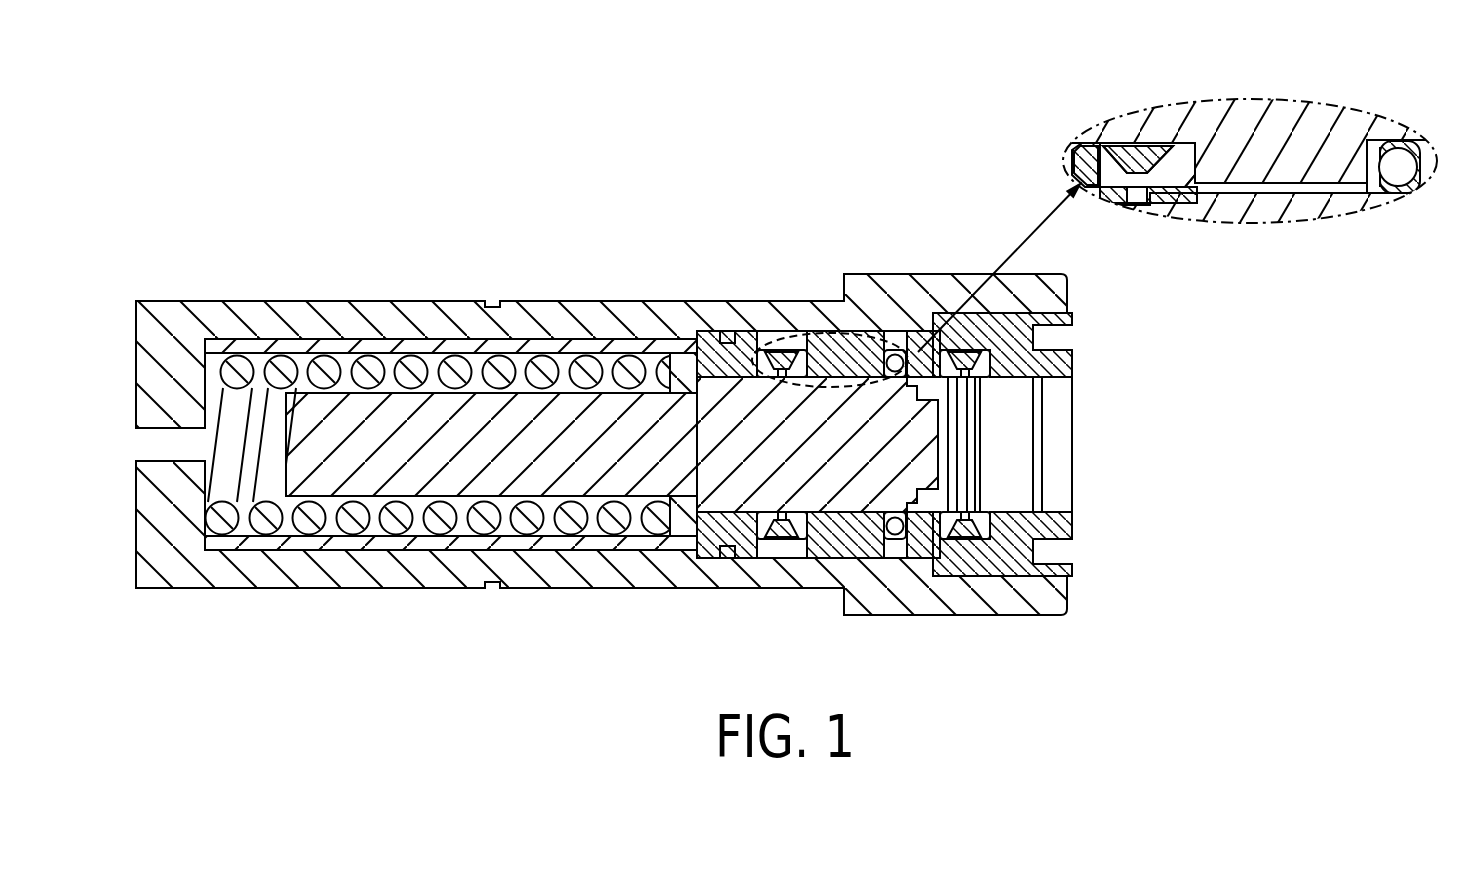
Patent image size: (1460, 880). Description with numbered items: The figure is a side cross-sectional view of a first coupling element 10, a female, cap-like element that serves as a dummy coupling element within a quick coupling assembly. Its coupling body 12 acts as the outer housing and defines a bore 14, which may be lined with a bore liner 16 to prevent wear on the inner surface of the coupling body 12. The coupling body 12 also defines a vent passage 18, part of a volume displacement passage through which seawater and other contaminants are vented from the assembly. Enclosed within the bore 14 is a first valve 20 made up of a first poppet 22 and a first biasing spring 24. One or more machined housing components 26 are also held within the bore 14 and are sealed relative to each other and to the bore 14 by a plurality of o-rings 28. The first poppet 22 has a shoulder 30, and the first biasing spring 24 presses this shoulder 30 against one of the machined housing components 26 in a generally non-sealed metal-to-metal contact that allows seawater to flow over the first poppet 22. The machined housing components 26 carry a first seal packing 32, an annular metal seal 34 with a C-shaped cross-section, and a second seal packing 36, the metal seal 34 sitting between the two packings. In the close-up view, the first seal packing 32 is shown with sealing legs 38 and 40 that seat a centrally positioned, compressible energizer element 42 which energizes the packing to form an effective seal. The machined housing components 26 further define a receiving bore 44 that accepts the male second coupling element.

The first coupling element 10 is at (607, 128).
The coupling body 12 is at (363, 301).
The bore 14 is at (258, 388).
The bore liner 16 is at (440, 347).
The vent passage 18 is at (147, 438).
The first valve 20 is at (507, 527).
The first poppet 22 is at (462, 480).
The first biasing spring 24 is at (307, 520).
The machined housing components 26 is at (887, 330).
The o-rings 28 is at (730, 337).
The shoulder 30 is at (688, 363).
The first seal packing 32 is at (780, 348).
The annular metal seal 34 is at (893, 365).
The second seal packing 36 is at (1027, 332).
The sealing leg 38 is at (1087, 157).
The sealing leg 40 is at (1192, 147).
The energizer element 42 is at (1138, 147).
The receiving bore 44 is at (1013, 418).